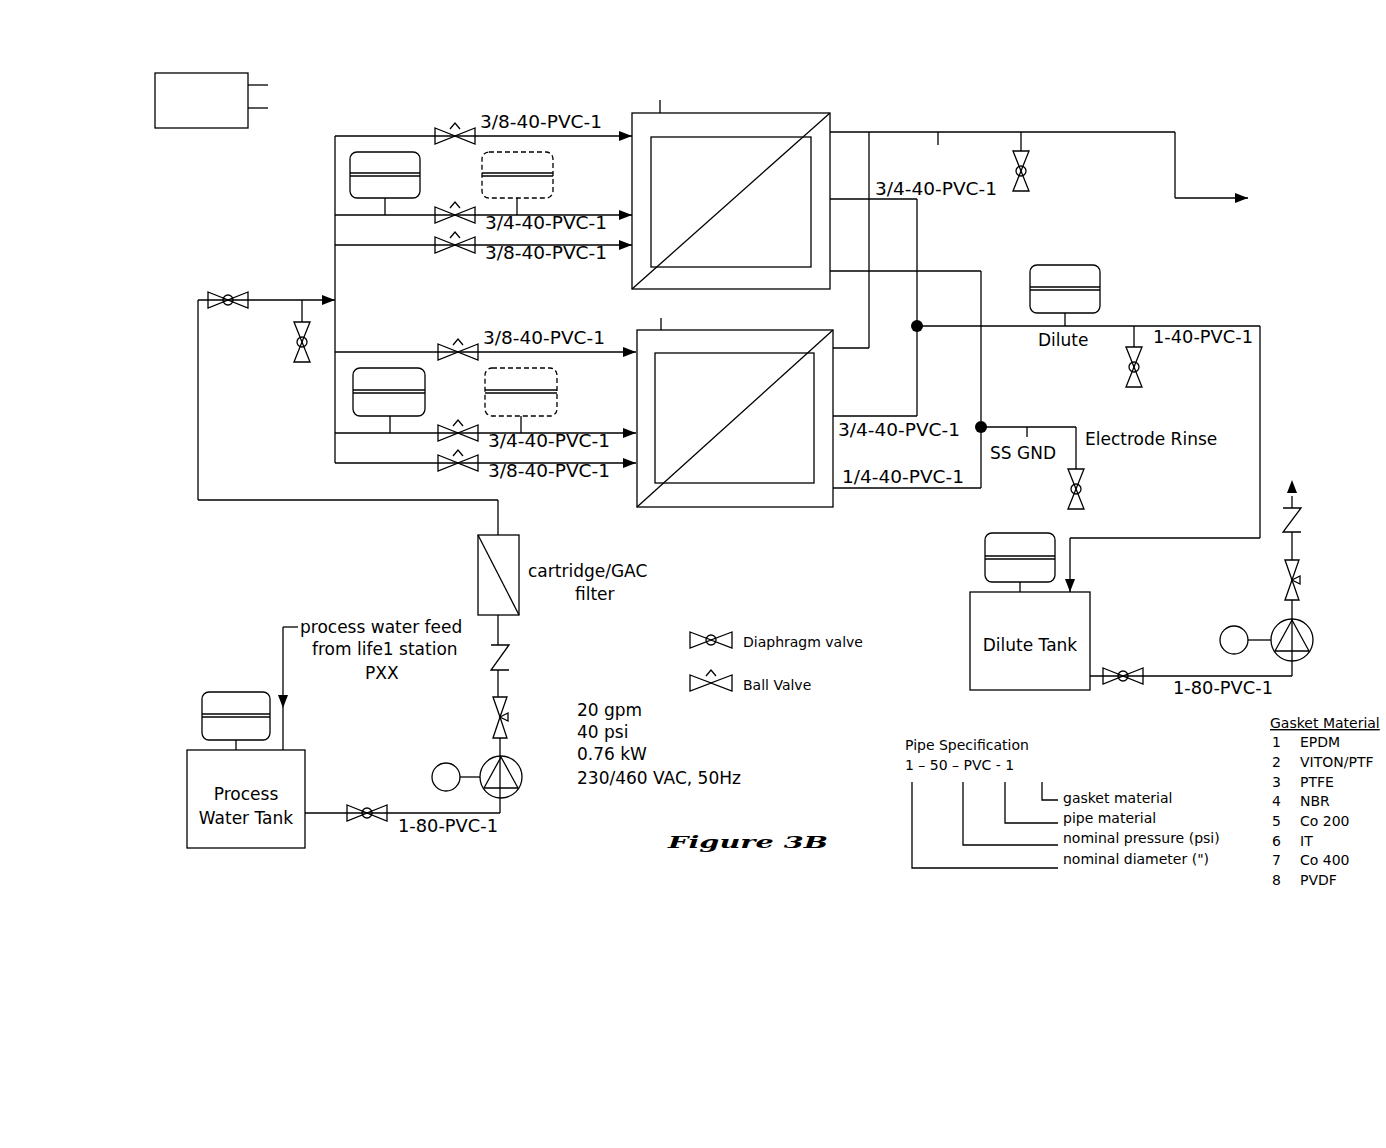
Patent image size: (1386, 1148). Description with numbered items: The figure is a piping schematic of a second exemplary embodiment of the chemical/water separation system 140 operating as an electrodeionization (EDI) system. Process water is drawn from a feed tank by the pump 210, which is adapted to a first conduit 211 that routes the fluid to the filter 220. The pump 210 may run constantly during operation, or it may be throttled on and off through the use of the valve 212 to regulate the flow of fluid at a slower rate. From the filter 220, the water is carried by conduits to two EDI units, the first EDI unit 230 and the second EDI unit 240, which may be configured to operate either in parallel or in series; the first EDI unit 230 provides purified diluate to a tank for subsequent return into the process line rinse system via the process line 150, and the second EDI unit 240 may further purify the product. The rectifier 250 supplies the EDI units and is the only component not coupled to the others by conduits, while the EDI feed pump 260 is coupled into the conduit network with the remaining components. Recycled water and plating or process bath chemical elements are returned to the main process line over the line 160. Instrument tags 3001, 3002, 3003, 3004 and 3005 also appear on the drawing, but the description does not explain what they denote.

The chemical/water separation system 140 is at (730, 333).
The process line 150 is at (1288, 500).
The line 160 is at (1109, 128).
The pump 210 is at (521, 785).
The first conduit 211 is at (502, 676).
The valve 212 is at (498, 716).
The filter 220 is at (478, 560).
The first EDI unit 230 is at (729, 185).
The second EDI unit 240 is at (732, 415).
The rectifier 250 is at (238, 100).
The EDI feed pump 260 is at (409, 292).
The level controller for process water tank 3001 is at (236, 721).
The level controller for dilute tank 3002 is at (1020, 562).
The pressure indicator 3003 is at (387, 292).
The flow indicator 3004 is at (519, 292).
The quality indicator 3005 is at (1065, 295).